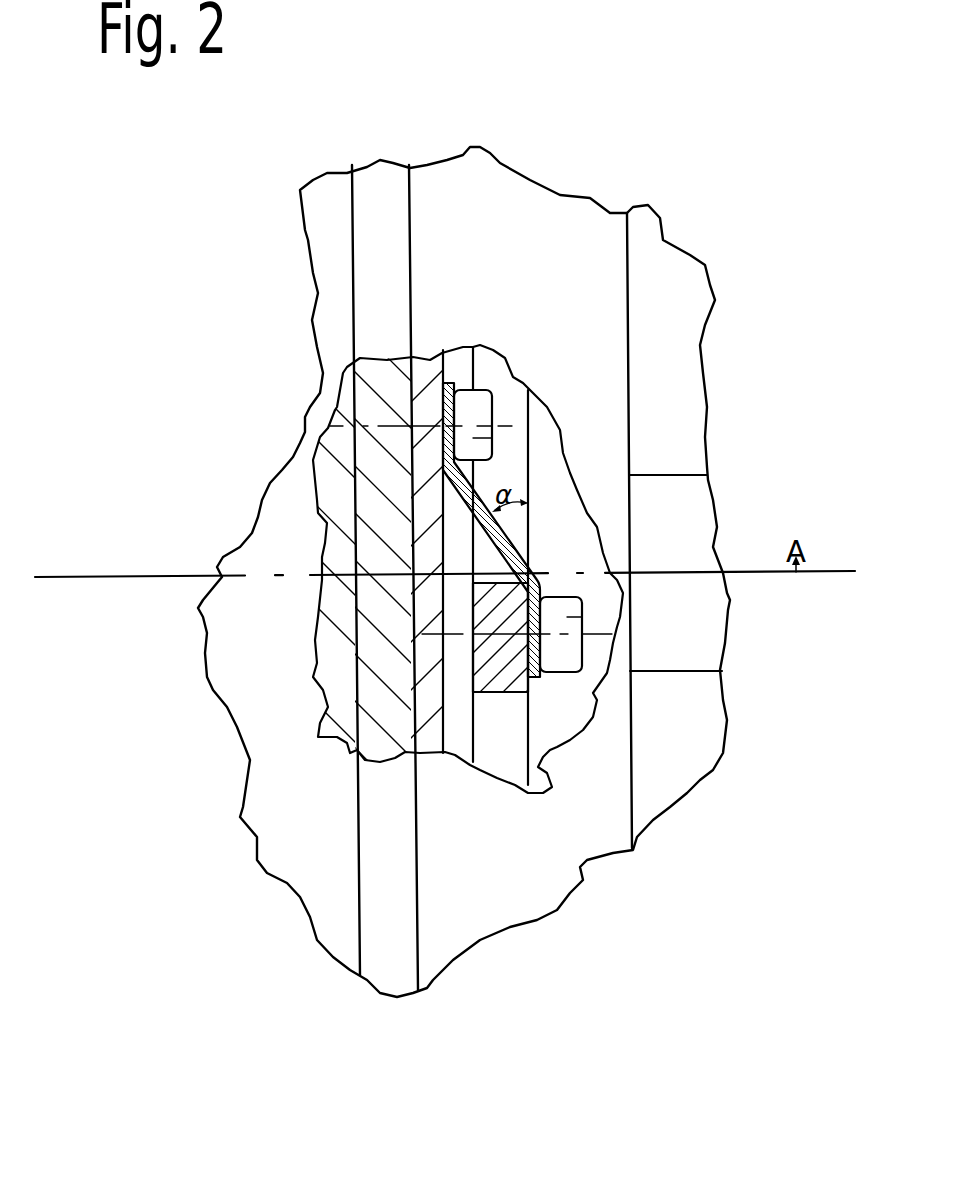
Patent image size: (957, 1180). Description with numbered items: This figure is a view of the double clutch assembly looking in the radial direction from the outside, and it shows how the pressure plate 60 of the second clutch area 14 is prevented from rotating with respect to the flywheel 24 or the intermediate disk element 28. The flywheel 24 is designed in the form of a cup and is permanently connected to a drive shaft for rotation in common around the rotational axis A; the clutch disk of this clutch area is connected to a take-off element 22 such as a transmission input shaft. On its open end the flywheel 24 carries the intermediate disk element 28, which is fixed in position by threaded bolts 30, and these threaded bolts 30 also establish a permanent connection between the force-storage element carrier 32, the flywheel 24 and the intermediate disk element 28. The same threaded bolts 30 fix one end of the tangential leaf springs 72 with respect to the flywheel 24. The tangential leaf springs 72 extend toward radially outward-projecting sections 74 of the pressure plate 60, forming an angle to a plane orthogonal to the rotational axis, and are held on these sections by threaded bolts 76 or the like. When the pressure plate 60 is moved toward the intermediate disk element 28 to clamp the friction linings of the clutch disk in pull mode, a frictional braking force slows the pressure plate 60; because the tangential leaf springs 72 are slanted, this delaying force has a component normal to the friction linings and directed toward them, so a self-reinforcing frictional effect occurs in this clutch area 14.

The second clutch area 14 is at (553, 328).
The take-off element 22 is at (692, 647).
The flywheel 24 is at (338, 470).
The intermediate disk element 28 is at (386, 363).
The threaded bolts 30 is at (492, 438).
The force-storage element carrier 32 is at (434, 358).
The pressure plate 60 is at (510, 473).
The tangential leaf springs 72 is at (478, 505).
The radially outward-projecting sections 74 is at (507, 673).
The threaded bolts 76 is at (567, 617).